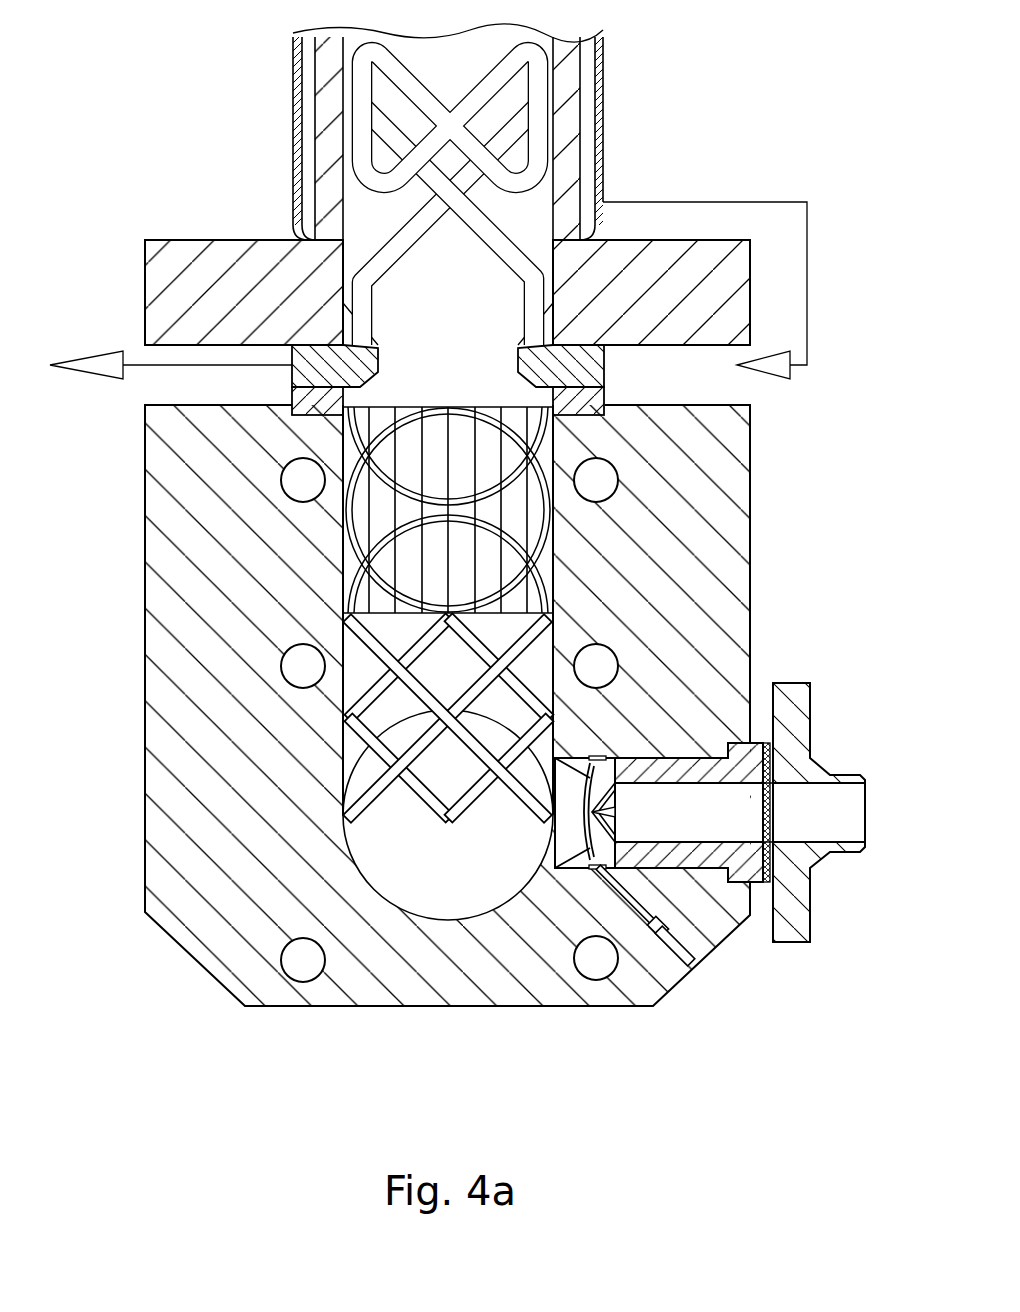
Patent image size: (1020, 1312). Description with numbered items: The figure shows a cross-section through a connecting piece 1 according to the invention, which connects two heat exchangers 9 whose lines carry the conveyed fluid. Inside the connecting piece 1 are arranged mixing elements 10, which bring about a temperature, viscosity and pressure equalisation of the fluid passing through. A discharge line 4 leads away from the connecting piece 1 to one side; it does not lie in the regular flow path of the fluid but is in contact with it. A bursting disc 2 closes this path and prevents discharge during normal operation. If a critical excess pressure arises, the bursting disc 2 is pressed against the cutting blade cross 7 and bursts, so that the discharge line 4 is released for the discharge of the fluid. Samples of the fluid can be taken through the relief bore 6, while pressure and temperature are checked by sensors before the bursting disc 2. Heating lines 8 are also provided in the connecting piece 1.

The connecting piece 1 is at (420, 955).
The bursting disc 2 is at (592, 813).
The discharge line 4 is at (740, 813).
The relief bore 6 is at (690, 968).
The cutting blade cross 7 is at (620, 822).
The heating line 8 is at (303, 959).
The heat exchanger 9 is at (562, 83).
The mixing elements 10 is at (490, 673).